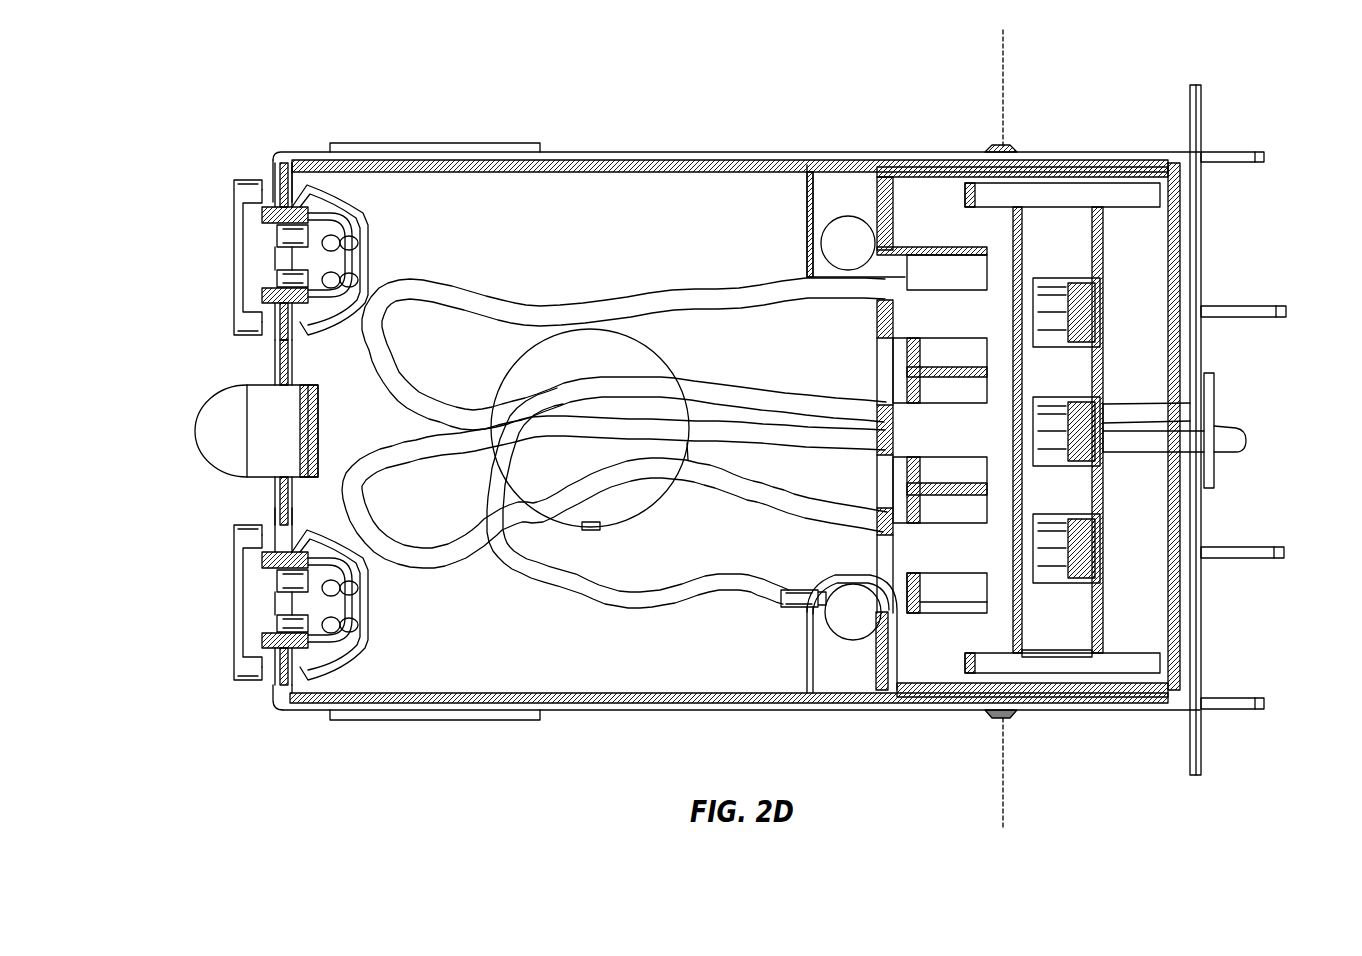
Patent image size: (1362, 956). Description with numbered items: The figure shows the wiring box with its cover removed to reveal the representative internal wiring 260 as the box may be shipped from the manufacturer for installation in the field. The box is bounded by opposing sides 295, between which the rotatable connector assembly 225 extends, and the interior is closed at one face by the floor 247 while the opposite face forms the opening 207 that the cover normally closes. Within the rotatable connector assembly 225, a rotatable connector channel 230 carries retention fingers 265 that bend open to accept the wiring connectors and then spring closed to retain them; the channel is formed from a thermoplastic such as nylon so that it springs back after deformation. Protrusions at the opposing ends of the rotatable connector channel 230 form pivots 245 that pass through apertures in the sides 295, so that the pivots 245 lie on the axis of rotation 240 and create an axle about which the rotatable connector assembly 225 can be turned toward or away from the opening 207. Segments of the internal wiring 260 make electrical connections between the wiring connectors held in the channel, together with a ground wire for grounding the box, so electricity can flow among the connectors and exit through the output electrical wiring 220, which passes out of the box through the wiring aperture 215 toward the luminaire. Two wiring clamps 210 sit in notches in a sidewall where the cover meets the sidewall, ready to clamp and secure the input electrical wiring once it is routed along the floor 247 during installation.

The opening 207 is at (462, 665).
The wiring clamp 210 is at (228, 258).
The wiring aperture 215 is at (1224, 394).
The output electrical wiring 220 is at (1152, 462).
The rotatable connector assembly 225 is at (1148, 230).
The rotatable connector channel 230 is at (1148, 280).
The axis of rotation 240 is at (1008, 80).
The pivots 245 is at (1000, 142).
The floor 247 is at (745, 649).
The internal wiring 260 is at (553, 256).
The retention fingers 265 is at (964, 326).
The sides 295 is at (730, 146).